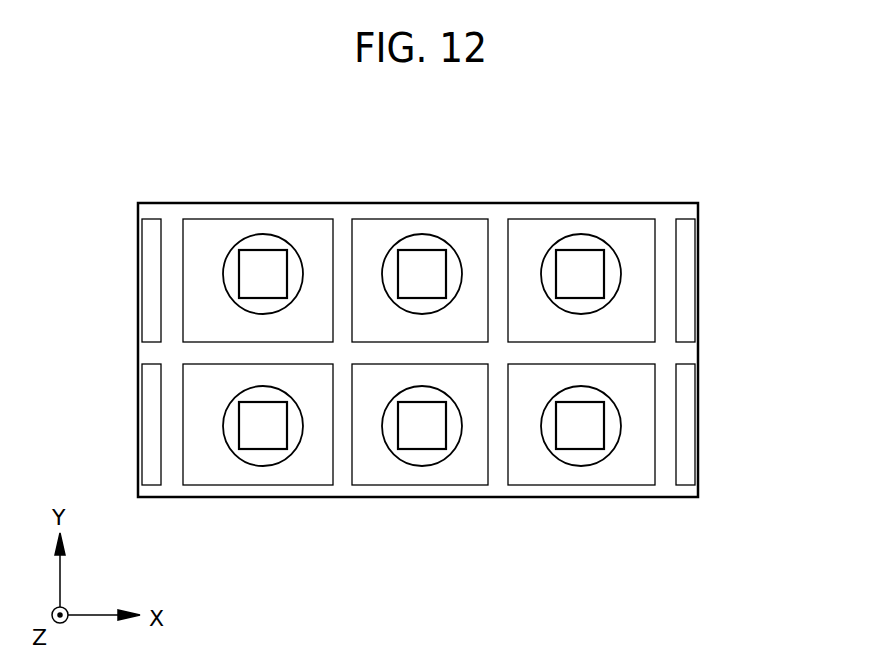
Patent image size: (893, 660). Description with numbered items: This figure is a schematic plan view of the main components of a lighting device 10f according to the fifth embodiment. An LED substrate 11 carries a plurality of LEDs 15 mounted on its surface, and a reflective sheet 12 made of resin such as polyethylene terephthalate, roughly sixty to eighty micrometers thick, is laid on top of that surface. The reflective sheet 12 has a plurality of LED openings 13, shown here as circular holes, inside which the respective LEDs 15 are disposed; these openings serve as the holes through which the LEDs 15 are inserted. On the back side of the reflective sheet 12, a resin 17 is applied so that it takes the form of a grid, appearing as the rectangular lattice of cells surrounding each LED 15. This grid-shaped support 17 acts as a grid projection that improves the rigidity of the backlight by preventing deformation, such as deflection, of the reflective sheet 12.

The lighting device 10f is at (468, 298).
The LED substrate 11 is at (699, 392).
The reflective sheet 12 is at (215, 228).
The LED opening 13 is at (264, 250).
The LED 15 is at (422, 258).
The resin (support) 17 is at (498, 247).